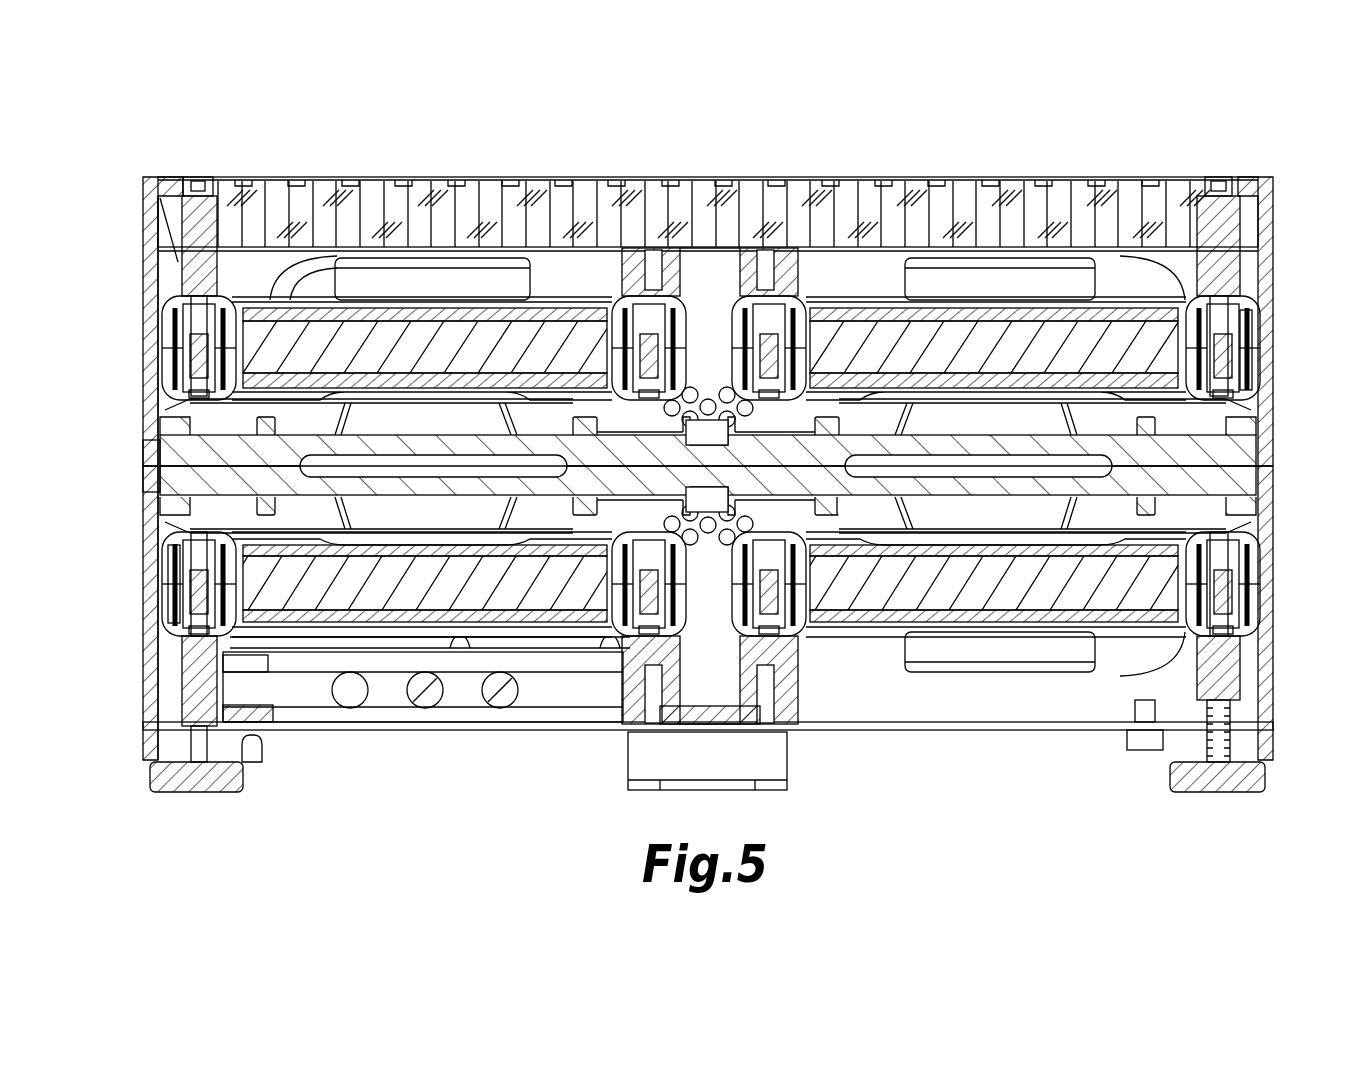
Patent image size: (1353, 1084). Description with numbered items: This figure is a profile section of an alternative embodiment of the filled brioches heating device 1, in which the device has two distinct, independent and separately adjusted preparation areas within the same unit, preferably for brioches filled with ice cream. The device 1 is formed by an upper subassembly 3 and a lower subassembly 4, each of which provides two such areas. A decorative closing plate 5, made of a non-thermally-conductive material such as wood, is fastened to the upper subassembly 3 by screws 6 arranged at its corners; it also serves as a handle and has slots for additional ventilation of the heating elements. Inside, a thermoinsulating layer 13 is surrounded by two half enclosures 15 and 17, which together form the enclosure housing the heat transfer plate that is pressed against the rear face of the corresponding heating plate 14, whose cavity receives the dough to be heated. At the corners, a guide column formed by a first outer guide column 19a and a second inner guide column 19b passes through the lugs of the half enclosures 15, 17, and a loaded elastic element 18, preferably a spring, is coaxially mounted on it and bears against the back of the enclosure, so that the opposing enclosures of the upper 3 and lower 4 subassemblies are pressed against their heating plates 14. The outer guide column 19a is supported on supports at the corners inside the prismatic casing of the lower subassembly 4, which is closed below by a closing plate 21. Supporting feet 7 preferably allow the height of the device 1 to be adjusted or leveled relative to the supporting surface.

The heating device 1 is at (154, 162).
The decorative closing plate 5 is at (700, 185).
The screws 6 is at (1210, 182).
The half enclosure 17 is at (1262, 312).
The half enclosure 15 is at (1262, 372).
The upper subassembly 3 is at (150, 366).
The heating plate 14 is at (165, 482).
The lower subassembly 4 is at (150, 530).
The first outer guide column 19a is at (178, 588).
The second inner guide column 19b is at (180, 620).
The loaded elastic element 18 is at (182, 652).
The feet 7 is at (218, 776).
The thermoinsulating layer 13 is at (858, 598).
The closing plate 21 is at (880, 732).